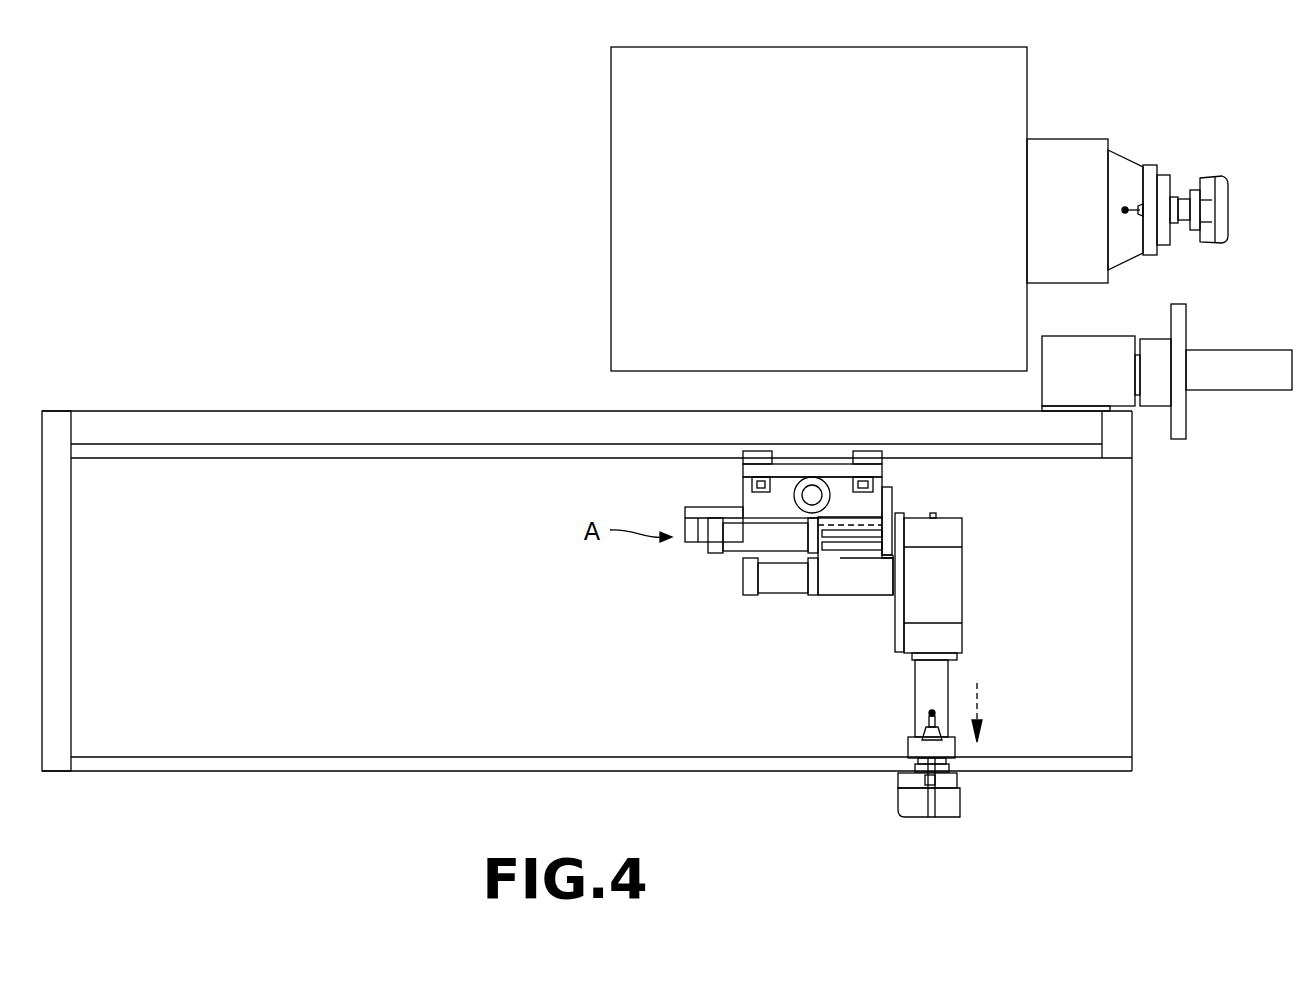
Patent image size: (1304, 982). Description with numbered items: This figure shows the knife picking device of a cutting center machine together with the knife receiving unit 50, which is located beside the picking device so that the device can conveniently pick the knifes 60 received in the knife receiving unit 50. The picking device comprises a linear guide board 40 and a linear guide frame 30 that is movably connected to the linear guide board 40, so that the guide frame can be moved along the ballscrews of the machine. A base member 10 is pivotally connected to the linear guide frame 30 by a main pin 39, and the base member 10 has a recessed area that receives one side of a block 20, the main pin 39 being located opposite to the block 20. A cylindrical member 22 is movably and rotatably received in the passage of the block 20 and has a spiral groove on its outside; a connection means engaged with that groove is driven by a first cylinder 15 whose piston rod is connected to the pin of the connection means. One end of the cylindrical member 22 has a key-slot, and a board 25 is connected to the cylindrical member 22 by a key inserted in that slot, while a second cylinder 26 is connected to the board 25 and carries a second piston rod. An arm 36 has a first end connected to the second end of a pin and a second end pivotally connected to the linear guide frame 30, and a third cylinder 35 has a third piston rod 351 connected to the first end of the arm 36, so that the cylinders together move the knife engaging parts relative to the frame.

The base member 10 is at (848, 590).
The first cylinder 15 is at (782, 580).
The block 20 is at (822, 582).
The cylindrical member 22 is at (905, 506).
The board 25 is at (898, 650).
The second cylinder 26 is at (955, 600).
The linear guide frame 30 is at (762, 504).
The third cylinder 35 is at (743, 538).
The arm 36 is at (880, 520).
The main pin 39 is at (885, 545).
The linear guide board 40 is at (285, 430).
The knife receiving unit 50 is at (260, 772).
The knife 60 is at (958, 797).
The third piston rod 351 is at (843, 488).